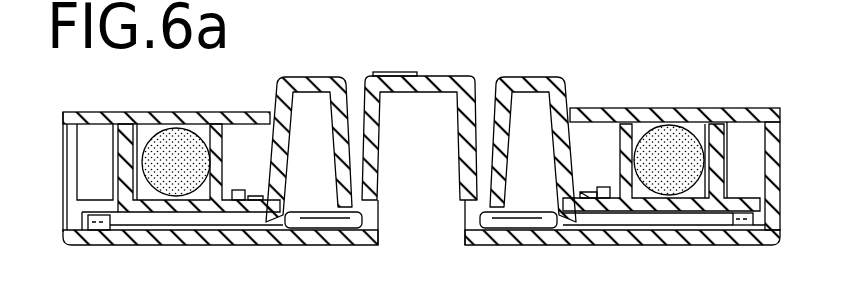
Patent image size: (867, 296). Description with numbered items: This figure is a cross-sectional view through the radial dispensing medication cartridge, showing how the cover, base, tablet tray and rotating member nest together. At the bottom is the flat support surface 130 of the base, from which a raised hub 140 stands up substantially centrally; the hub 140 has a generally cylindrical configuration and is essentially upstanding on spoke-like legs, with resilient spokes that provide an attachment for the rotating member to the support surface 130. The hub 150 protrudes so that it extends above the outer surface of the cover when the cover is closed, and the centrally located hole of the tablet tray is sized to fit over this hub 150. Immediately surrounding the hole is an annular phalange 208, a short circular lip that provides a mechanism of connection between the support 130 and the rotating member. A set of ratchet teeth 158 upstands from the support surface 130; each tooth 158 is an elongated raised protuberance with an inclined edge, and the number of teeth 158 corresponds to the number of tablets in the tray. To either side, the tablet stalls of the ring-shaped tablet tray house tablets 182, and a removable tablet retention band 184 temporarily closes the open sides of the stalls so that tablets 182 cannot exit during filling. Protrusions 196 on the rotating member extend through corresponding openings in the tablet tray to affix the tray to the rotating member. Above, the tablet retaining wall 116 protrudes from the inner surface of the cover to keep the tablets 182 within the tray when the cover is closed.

The tablet retaining wall 116 is at (722, 121).
The flat support surface 130 is at (530, 235).
The raised hub 140 is at (472, 96).
The hub 150 is at (393, 72).
The ratchet teeth 158 is at (100, 232).
The tablets 182 is at (178, 158).
The removable tablet retention band 184 is at (145, 128).
The protrusions 196 is at (604, 210).
The annular phalange 208 is at (344, 214).